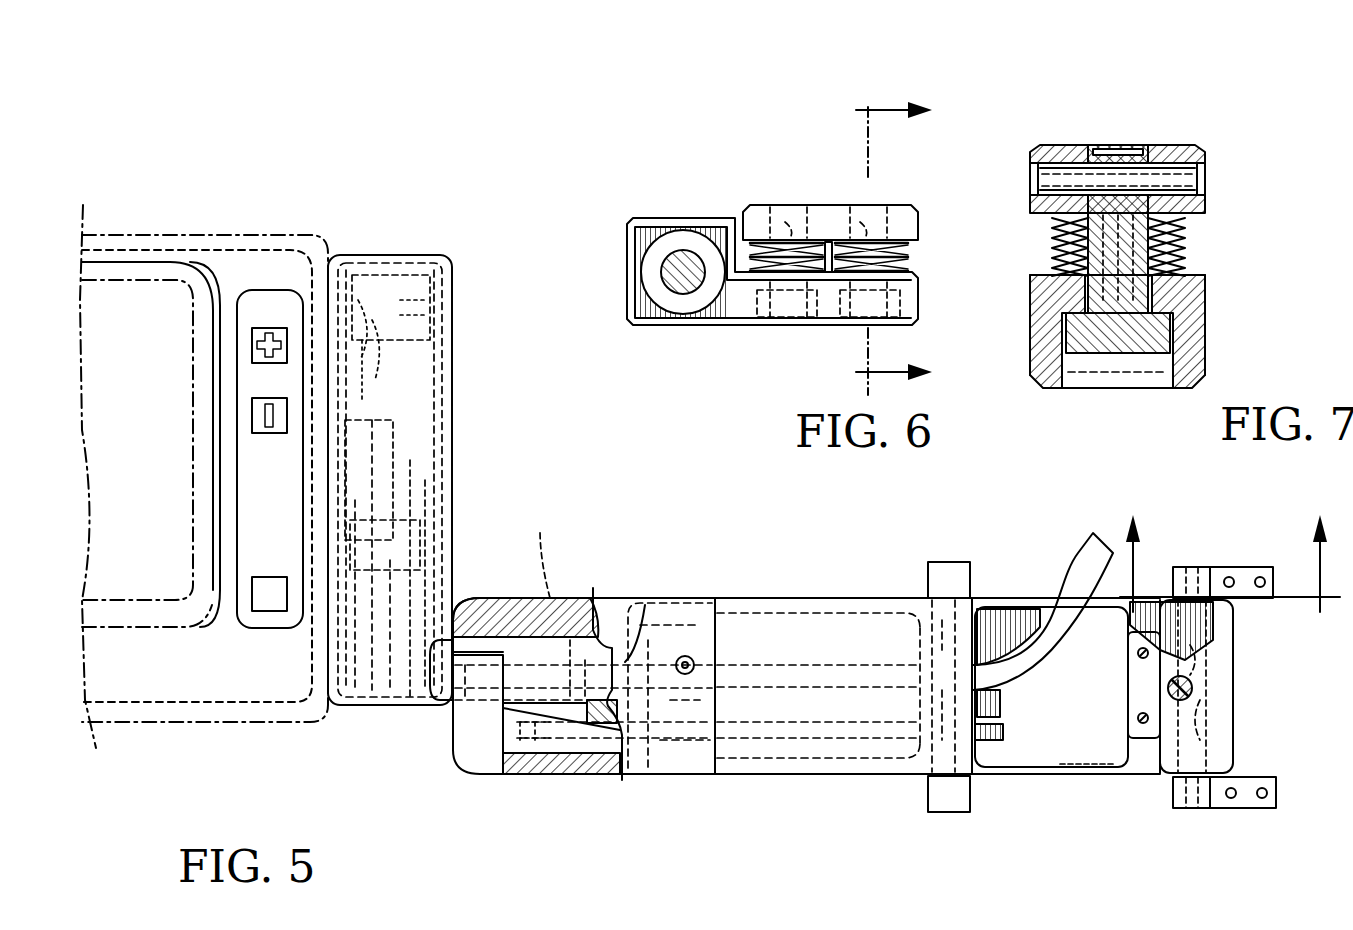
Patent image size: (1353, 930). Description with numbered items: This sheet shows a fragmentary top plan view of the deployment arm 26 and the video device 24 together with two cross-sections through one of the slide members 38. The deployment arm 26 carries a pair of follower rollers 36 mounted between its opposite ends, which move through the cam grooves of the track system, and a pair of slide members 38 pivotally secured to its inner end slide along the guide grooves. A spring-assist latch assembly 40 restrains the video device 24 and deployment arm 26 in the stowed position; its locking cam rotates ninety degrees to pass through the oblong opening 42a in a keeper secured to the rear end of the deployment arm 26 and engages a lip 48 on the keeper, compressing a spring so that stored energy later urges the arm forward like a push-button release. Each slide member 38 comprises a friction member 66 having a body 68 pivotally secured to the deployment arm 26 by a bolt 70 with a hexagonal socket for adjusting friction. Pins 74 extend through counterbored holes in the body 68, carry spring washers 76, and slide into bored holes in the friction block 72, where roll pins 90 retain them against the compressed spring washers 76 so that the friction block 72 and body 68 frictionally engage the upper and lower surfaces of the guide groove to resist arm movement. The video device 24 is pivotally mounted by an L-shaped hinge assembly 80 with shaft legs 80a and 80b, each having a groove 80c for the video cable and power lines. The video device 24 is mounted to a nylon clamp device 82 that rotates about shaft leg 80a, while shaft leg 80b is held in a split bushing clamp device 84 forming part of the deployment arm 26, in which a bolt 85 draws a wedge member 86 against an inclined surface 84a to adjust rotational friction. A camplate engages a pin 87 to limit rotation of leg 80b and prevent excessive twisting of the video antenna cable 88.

In FIG. 5, the video device 24 is at (290, 733).
In FIG. 5, the deployment arm 26 is at (776, 592).
In FIG. 5, the follower rollers 36 is at (955, 578).
In FIG. 5, the slide members 38 is at (1262, 608).
In FIG. 6, the slide members 38 is at (670, 212).
In FIG. 7, the slide members 38 is at (1032, 382).
In FIG. 5, the spring-assist latch assembly 40 is at (1150, 738).
In FIG. 5, the oblong opening 42a is at (1124, 710).
In FIG. 5, the lip 48 is at (1140, 660).
In FIG. 5, the friction members 66 is at (1255, 570).
In FIG. 6, the friction members 66 is at (877, 196).
In FIG. 7, the friction members 66 is at (1170, 138).
In FIG. 6, the body 68 is at (630, 330).
In FIG. 7, the body 68 is at (1216, 325).
In FIG. 5, the bolt 70 is at (1190, 585).
In FIG. 6, the bolt 70 is at (792, 223).
In FIG. 6, the friction block 72 is at (905, 215).
In FIG. 7, the friction block 72 is at (1180, 145).
In FIG. 5, the pins 74 is at (1246, 573).
In FIG. 6, the pins 74 is at (866, 305).
In FIG. 7, the pins 74 is at (1120, 148).
In FIG. 6, the spring washers 76 is at (912, 258).
In FIG. 7, the spring washers 76 is at (1192, 231).
In FIG. 5, the hinge assembly 80 is at (455, 266).
In FIG. 5, the shaft leg 80a is at (402, 432).
In FIG. 5, the shaft leg 80b is at (548, 657).
In FIG. 5, the groove 80c is at (420, 470).
In FIG. 5, the clamp device 82 is at (385, 310).
In FIG. 5, the split bushing clamp device 84 is at (503, 708).
In FIG. 5, the inclined surface 84a is at (580, 708).
In FIG. 5, the bolt 85 is at (990, 740).
In FIG. 5, the wedge member 86 is at (628, 615).
In FIG. 5, the pin 87 is at (598, 625).
In FIG. 5, the video antenna cable 88 is at (1068, 558).
In FIG. 7, the roll pins 90 is at (1208, 165).